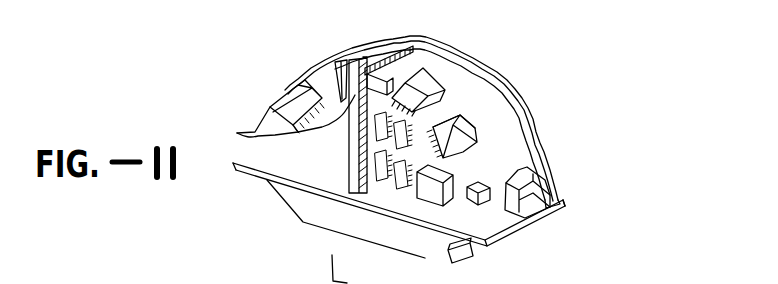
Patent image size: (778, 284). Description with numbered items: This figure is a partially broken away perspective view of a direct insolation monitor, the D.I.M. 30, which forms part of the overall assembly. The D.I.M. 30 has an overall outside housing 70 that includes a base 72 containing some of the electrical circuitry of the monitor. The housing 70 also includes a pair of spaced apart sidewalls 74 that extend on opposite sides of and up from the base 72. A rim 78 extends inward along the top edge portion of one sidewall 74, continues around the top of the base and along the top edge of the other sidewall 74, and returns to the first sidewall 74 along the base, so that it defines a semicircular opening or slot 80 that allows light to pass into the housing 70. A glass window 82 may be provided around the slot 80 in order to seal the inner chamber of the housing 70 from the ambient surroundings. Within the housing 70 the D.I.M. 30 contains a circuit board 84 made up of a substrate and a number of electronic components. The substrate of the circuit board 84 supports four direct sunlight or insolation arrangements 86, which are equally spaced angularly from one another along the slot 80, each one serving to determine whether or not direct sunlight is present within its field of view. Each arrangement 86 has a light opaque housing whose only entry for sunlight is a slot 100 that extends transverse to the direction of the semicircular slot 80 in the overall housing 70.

The direct insolation monitor 30 is at (602, 56).
The outside housing 70 is at (281, 205).
The base 72 is at (333, 229).
The sidewalls 74 is at (237, 134).
The rim 78 is at (370, 60).
The semicircular opening or slot 80 is at (472, 114).
The glass window 82 is at (390, 50).
The circuit board 84 is at (486, 168).
The direct sunlight or insolation arrangements 86 is at (292, 84).
The slot 100 is at (470, 145).